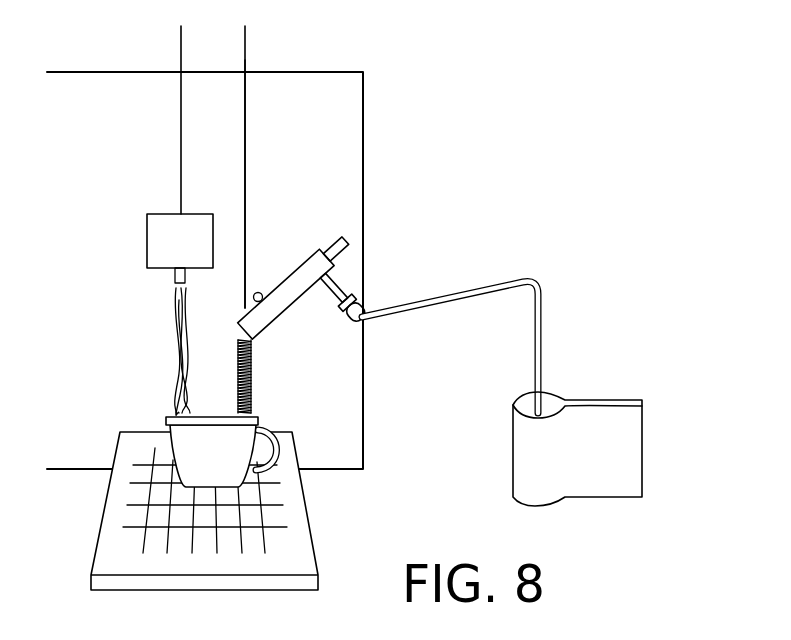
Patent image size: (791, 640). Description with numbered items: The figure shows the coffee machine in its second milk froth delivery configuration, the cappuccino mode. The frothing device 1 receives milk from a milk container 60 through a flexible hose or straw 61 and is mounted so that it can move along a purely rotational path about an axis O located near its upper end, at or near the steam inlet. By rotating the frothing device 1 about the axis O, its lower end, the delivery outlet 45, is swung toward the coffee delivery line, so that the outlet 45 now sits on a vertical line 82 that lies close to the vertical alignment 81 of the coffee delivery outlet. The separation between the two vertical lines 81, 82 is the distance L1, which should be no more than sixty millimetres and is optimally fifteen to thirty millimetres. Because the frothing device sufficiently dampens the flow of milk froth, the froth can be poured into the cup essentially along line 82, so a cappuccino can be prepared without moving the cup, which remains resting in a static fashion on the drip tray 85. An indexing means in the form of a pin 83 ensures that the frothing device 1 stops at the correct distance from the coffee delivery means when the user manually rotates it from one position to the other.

The frothing device 1 is at (386, 237).
The delivery outlet 45 is at (257, 338).
The milk container 60 is at (625, 439).
The flexible hose or straw 61 is at (542, 298).
The vertical alignment of the coffee delivery outlet 81 is at (173, 337).
The vertical line 82 is at (245, 159).
The pin 83 is at (258, 292).
The drip tray 85 is at (108, 541).
The axis O is at (345, 237).
The optimal distance L1 is at (245, 46).